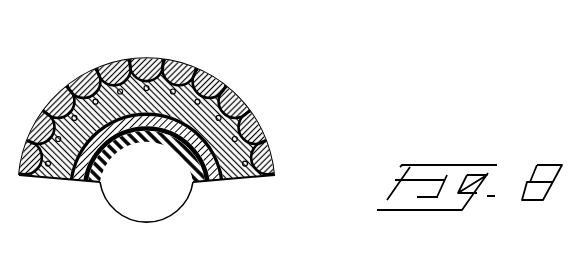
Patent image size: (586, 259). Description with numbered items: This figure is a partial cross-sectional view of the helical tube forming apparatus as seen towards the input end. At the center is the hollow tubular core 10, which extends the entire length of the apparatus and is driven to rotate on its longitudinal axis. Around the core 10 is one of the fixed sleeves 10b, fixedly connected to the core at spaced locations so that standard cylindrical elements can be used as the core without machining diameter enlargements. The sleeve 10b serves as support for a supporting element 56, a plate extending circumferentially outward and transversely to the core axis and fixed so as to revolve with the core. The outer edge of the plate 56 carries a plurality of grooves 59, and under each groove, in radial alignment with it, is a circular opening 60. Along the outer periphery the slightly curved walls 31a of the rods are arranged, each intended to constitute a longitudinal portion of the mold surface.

The central core 10 is at (127, 144).
The fixed sleeve 10b is at (213, 183).
The curved wall of rod 31a is at (133, 64).
The supporting element 56 is at (62, 182).
The groove 59 is at (190, 64).
The circular opening 60 is at (80, 78).